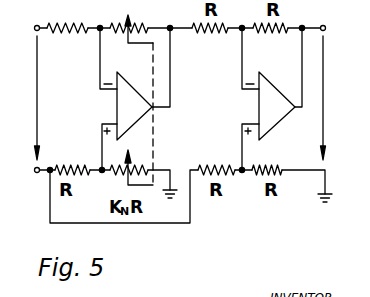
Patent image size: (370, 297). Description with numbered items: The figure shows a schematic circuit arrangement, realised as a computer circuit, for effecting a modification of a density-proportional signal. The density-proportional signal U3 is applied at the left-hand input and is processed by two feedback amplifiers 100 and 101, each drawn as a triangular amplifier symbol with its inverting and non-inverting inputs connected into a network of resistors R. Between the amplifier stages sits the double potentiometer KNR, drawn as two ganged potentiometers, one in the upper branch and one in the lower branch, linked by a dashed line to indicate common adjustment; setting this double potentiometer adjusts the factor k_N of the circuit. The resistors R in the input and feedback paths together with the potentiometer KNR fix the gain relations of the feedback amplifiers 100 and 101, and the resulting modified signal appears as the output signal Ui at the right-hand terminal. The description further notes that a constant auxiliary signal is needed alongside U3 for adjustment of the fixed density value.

The feedback amplifier 100 is at (117, 116).
The feedback amplifier 101 is at (258, 116).
The resistor R is at (67, 16).
The double potentiometer KNR is at (135, 21).
The density-proportional signal U3 is at (23, 98).
The output signal Ui is at (336, 98).